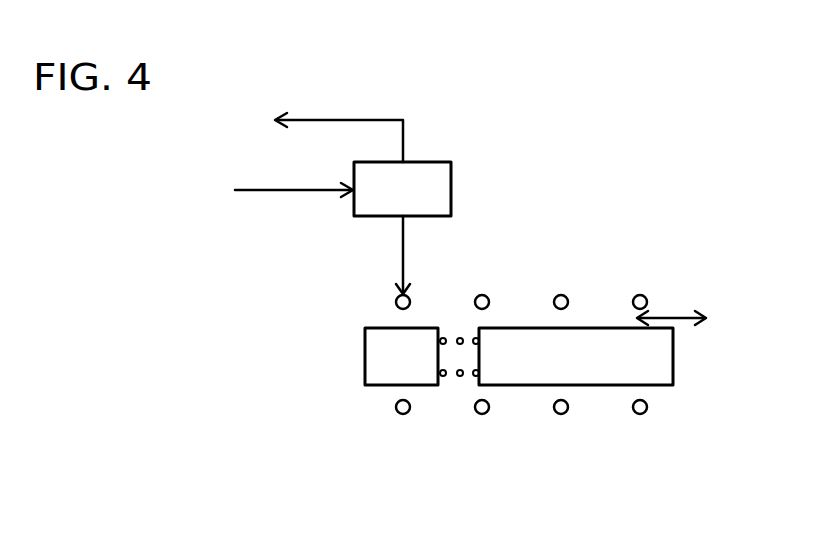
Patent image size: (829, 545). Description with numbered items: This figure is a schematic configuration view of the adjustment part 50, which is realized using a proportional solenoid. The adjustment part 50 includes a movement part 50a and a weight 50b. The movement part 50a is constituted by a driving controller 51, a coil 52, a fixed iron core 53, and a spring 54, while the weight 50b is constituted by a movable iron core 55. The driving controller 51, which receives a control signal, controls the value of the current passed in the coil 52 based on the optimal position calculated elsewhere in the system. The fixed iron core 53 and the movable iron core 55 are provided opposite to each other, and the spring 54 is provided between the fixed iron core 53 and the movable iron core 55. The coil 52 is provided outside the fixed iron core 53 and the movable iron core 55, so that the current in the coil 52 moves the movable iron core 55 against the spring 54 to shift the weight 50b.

The adjustment part 50 is at (343, 104).
The movement part 50a is at (685, 115).
The weight 50b is at (576, 356).
The driving controller 51 is at (435, 188).
The coil 52 is at (536, 262).
The fixed iron core 53 is at (467, 247).
The spring 54 is at (532, 243).
The movable iron core 55 is at (598, 360).